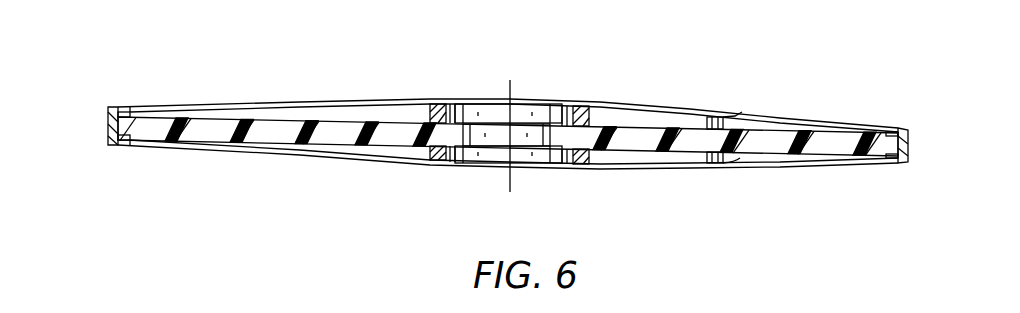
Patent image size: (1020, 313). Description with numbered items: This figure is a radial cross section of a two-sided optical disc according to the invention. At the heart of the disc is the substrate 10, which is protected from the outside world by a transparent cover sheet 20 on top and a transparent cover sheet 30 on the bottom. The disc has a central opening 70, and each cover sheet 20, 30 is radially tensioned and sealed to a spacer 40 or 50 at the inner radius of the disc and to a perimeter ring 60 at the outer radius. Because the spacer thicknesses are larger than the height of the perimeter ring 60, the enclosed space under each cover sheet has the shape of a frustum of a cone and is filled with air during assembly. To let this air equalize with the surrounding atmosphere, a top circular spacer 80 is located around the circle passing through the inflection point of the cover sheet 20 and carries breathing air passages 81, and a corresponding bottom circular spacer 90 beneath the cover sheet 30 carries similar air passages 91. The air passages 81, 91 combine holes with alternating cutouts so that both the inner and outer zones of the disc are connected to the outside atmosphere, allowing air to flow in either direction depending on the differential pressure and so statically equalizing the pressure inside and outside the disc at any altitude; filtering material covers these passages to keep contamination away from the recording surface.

The substrate 10 is at (640, 150).
The cover sheet 20 is at (645, 105).
The cover sheet 30 is at (800, 168).
The spacer 40 is at (470, 100).
The spacer 50 is at (425, 152).
The perimeter ring 60 is at (906, 130).
The central opening 70 is at (505, 136).
The top circular spacer 80 is at (752, 112).
The breathing air passages 81 is at (718, 113).
The bottom circular spacer 90 is at (730, 160).
The air passages 91 is at (718, 163).